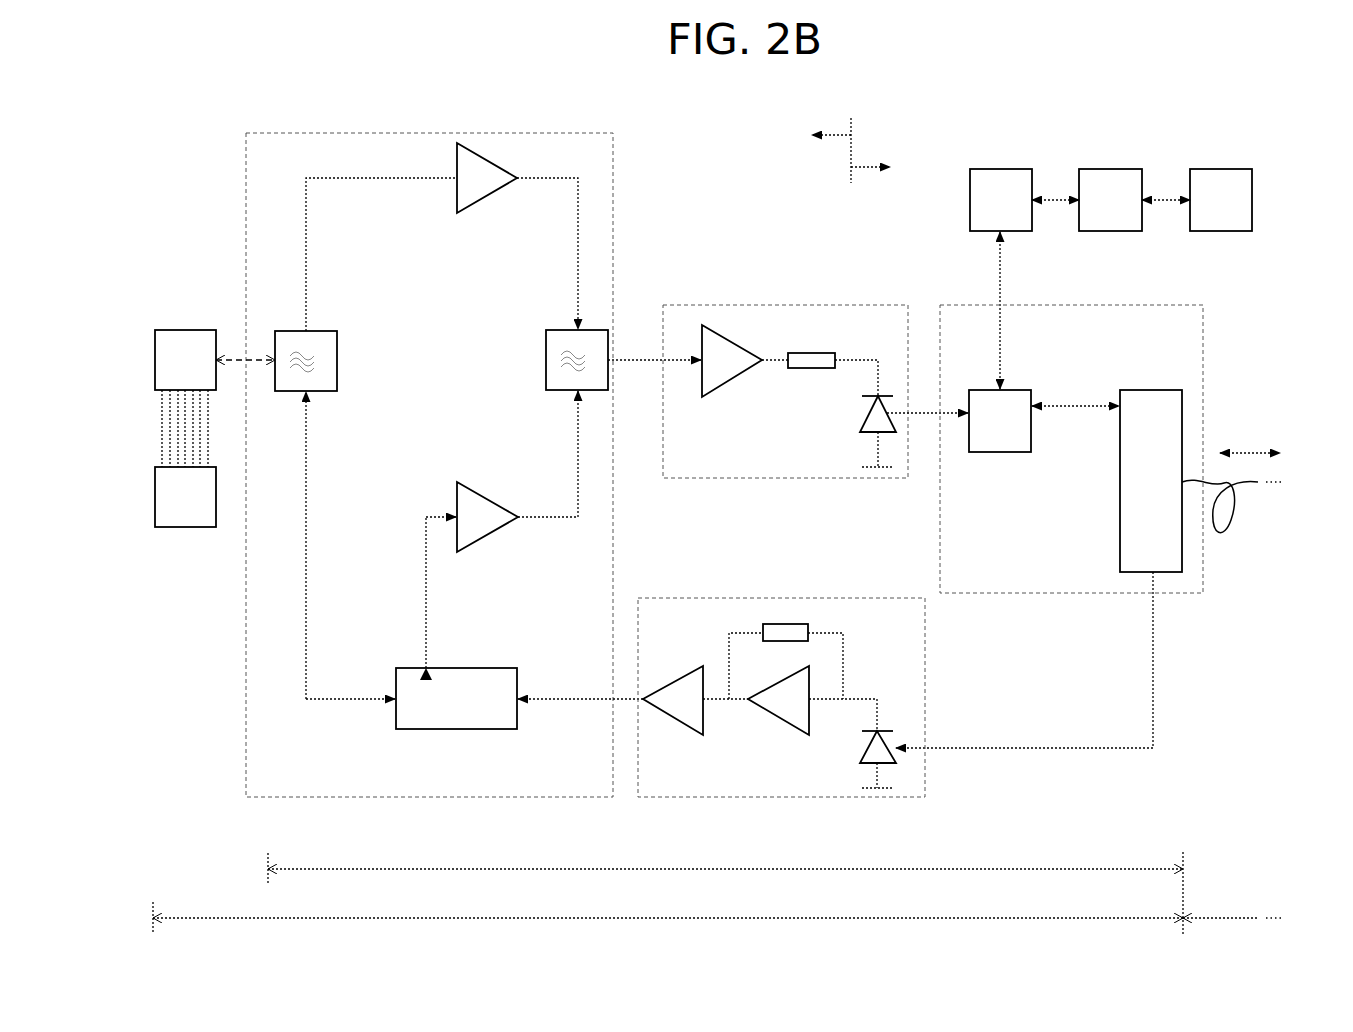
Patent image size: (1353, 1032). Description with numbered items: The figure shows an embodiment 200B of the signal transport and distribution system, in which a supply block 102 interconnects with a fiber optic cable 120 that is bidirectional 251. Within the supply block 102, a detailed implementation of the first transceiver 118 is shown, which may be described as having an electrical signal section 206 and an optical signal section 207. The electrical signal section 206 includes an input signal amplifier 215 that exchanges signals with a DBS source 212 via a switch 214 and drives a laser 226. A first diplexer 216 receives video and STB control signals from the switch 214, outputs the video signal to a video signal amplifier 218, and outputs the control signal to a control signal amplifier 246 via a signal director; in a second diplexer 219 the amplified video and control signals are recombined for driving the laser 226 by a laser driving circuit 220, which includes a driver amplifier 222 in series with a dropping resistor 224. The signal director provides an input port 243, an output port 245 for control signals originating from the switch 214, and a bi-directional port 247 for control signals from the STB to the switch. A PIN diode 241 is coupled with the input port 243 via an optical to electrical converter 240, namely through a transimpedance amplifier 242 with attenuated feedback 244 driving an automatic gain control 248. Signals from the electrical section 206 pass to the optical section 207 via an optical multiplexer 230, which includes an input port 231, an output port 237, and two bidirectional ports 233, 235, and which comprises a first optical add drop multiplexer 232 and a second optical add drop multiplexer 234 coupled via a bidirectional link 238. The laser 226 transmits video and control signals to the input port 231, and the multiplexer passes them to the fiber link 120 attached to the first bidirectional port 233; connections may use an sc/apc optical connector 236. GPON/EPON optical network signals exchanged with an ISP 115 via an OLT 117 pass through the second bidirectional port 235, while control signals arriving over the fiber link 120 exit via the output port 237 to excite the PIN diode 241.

The embodiment of the signal transport and distribution system 200B is at (1140, 122).
The electrical signal section 206 is at (809, 150).
The optical signal section 207 is at (891, 169).
The sc/apc optical connector 236 is at (1001, 200).
The OLT 117 is at (1110, 200).
The ISP 115 is at (1221, 200).
The second bidirectional port 235 is at (997, 292).
The input signal amplifier 215 is at (429, 465).
The switch 214 is at (185, 360).
The DBS source 212 is at (185, 497).
The first diplexer 216 is at (306, 361).
The second diplexer 219 is at (577, 360).
The video signal amplifier 218 is at (463, 207).
The control signal amplifier 246 is at (490, 527).
The output port 245 is at (405, 700).
The bi-directional port 247 is at (398, 698).
The input port 243 is at (405, 702).
The laser driving circuit 220 is at (785, 391).
The driver amplifier 222 is at (740, 352).
The dropping resistor 224 is at (800, 370).
The laser 226 is at (866, 406).
The optical multiplexer 230 is at (1071, 449).
The input port 231 is at (966, 420).
The first optical add drop multiplexer 232 is at (1000, 421).
The bidirectional link 238 is at (1075, 395).
The second optical add drop multiplexer 234 is at (1151, 481).
The first bidirectional port 233 is at (1185, 476).
The bidirectional 251 is at (1250, 439).
The fiber optic cable 120 is at (1224, 542).
The output port 237 is at (1158, 598).
The optical to electrical converter 240 is at (781, 697).
The automatic gain control 248 is at (665, 684).
The attenuated feedback 244 is at (798, 624).
The transimpedance amplifier 242 is at (765, 712).
The PIN diode 241 is at (862, 746).
The first transceiver 118 is at (725, 863).
The supply block 102 is at (668, 912).